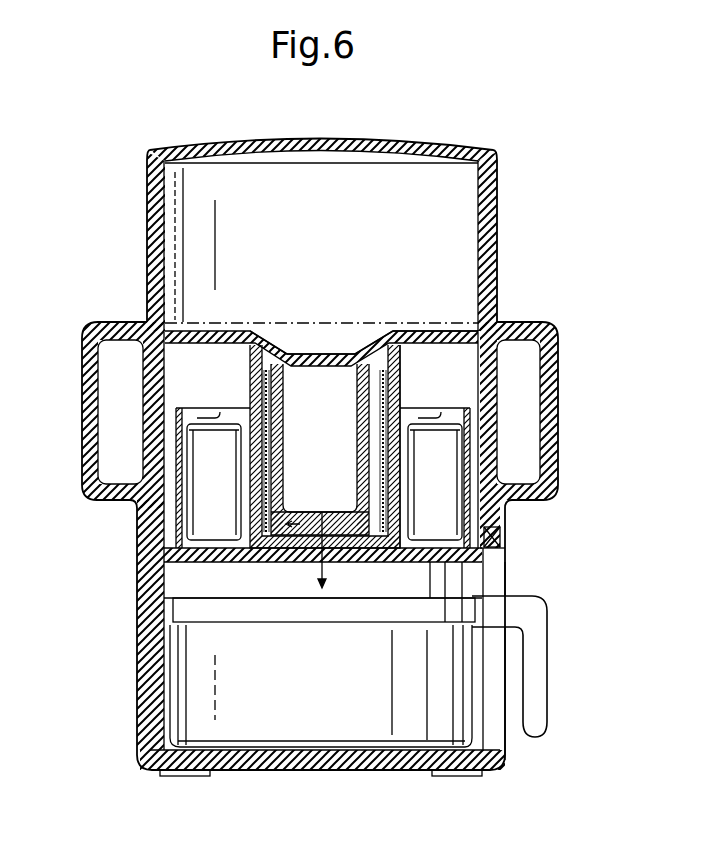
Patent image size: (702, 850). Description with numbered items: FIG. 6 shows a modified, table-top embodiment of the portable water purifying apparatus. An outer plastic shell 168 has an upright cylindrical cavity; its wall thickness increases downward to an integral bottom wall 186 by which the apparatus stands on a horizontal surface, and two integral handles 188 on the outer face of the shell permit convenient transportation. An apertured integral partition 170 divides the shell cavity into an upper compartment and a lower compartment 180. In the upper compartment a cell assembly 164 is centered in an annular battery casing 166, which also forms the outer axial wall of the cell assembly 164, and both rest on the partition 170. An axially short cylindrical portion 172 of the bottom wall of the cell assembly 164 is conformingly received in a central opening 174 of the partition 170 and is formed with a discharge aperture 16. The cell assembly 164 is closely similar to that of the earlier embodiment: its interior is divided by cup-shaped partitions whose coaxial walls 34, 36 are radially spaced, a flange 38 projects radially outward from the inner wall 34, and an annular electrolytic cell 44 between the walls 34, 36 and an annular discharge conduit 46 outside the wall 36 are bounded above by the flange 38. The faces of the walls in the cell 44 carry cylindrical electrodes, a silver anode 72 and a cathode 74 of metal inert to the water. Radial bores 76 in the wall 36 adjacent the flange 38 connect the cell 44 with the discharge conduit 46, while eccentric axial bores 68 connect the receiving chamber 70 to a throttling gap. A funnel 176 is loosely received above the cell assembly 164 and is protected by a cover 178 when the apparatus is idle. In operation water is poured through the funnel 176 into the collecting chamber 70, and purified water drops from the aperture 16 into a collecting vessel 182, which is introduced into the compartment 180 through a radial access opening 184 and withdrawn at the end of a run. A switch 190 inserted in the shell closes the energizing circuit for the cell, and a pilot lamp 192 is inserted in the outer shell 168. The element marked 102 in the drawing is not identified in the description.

The discharge aperture 16 is at (332, 565).
The inner partition wall 34 is at (293, 352).
The outer partition wall 36 is at (392, 405).
The flange 38 is at (384, 340).
The annular electrolytic cell 44 is at (392, 515).
The annular discharge conduit 46 is at (252, 410).
The eccentric axial bores 68 is at (283, 563).
The receiving chamber 70 is at (362, 340).
The silver anode 72 is at (300, 380).
The cathode 74 is at (377, 418).
The radial bores 76 is at (249, 365).
The cartridge 102 is at (230, 477).
The cell assembly 164 is at (410, 350).
The battery casing 166 is at (178, 512).
The outer plastic shell 168 is at (492, 245).
The partition 170 is at (190, 563).
The cylindrical portion 172 is at (370, 563).
The central opening 174 is at (268, 565).
The funnel 176 is at (492, 210).
The cover 178 is at (490, 152).
The lower compartment 180 is at (165, 646).
The collecting vessel 182 is at (328, 705).
The radial access opening 184 is at (500, 732).
The bottom wall 186 is at (300, 763).
The handles 188 is at (85, 380).
The switch 190 is at (507, 535).
The pilot lamp 192 is at (507, 553).